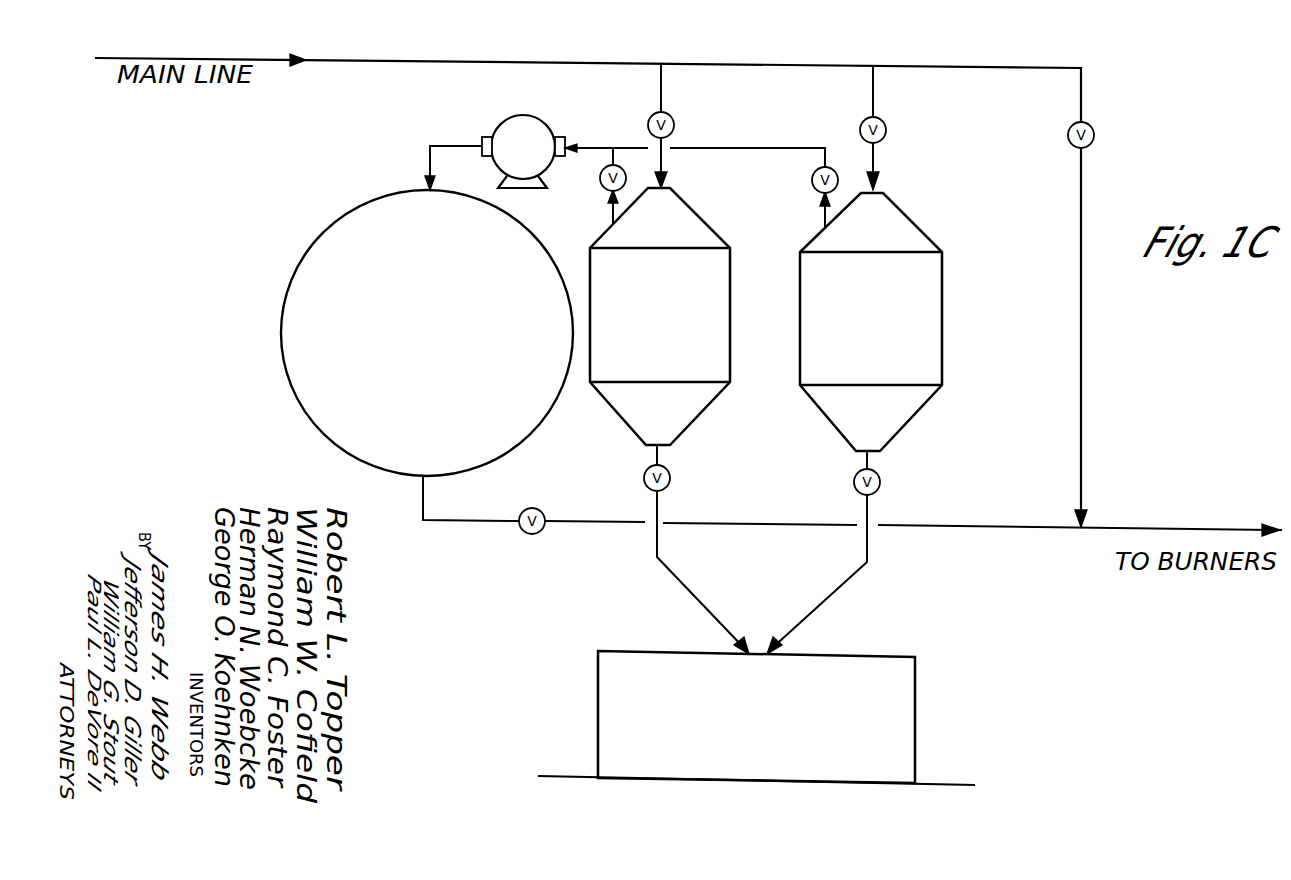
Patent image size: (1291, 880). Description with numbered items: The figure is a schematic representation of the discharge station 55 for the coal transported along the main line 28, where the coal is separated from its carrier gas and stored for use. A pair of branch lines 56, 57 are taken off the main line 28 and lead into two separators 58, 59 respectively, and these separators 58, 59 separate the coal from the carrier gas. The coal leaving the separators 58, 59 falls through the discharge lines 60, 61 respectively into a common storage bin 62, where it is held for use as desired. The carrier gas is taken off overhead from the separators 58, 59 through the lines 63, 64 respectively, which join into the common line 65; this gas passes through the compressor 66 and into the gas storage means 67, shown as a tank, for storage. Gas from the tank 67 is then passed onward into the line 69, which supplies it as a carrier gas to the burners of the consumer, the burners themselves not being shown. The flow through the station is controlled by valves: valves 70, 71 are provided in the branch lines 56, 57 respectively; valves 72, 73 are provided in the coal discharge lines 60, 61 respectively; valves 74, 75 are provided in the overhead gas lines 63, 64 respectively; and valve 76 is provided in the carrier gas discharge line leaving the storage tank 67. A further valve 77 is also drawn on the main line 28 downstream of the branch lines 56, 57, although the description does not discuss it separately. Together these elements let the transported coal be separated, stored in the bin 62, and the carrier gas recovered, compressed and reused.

The main line 28 is at (454, 58).
The discharge station 55 is at (427, 311).
The branch line 56 is at (662, 97).
The branch line 57 is at (874, 99).
The separator 58 is at (672, 283).
The separator 59 is at (884, 288).
The discharge line 60 is at (659, 513).
The discharge line 61 is at (869, 513).
The storage bin 62 is at (773, 689).
The line 63 is at (612, 212).
The line 64 is at (824, 210).
The common line 65 is at (591, 147).
The compressor 66 is at (530, 116).
The gas storage means 67 is at (407, 406).
The line 69 is at (1178, 529).
The valve 70 is at (674, 128).
The valve 71 is at (886, 135).
The valve 72 is at (670, 481).
The valve 73 is at (880, 485).
The valve 74 is at (600, 178).
The valve 75 is at (812, 180).
The valve 76 is at (540, 531).
The valve 77 is at (1094, 138).